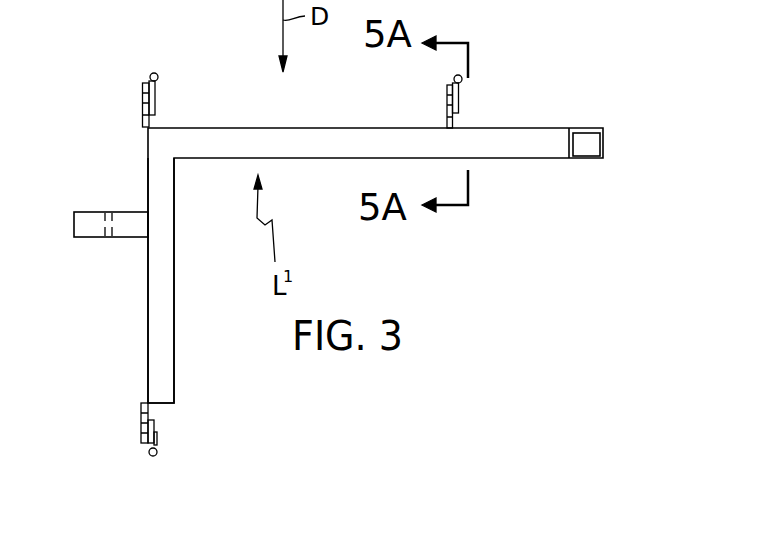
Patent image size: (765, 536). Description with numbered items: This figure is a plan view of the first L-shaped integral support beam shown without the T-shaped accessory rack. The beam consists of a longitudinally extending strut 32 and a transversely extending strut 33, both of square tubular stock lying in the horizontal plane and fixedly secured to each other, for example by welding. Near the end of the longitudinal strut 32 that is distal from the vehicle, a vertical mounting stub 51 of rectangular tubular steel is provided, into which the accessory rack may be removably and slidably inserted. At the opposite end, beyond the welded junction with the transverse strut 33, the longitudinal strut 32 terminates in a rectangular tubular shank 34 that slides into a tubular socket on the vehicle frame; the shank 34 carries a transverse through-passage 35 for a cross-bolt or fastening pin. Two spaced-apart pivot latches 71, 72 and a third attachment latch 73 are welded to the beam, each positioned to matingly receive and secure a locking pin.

The longitudinal strut 32 is at (290, 158).
The transverse strut 33 is at (174, 319).
The rectangular tubular shank 34 is at (87, 238).
The through-passage 35 is at (110, 212).
The mounting stub 51 is at (602, 128).
The pivot latch 71 is at (445, 97).
The pivot latch 72 is at (142, 103).
The attachment latch 73 is at (141, 430).